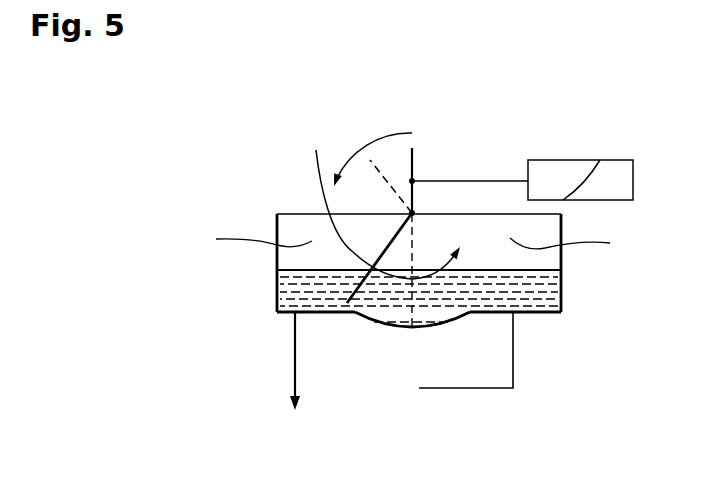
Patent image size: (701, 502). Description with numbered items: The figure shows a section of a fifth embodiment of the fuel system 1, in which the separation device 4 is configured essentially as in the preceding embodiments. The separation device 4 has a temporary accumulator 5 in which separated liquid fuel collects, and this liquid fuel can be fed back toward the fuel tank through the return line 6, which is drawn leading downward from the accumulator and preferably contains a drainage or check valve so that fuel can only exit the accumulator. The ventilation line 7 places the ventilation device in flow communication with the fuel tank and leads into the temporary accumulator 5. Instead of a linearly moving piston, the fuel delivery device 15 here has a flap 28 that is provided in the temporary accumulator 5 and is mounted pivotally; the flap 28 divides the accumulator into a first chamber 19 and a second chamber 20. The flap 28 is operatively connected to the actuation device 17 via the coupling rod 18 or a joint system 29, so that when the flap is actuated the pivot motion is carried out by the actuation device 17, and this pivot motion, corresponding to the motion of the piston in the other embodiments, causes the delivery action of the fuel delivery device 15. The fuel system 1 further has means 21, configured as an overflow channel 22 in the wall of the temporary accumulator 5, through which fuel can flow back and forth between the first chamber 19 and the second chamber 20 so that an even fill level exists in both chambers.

The fuel system 1 is at (240, 157).
The separation device 4 is at (501, 132).
The temporary accumulator 5 is at (436, 240).
The return line 6 is at (293, 352).
The ventilation line 7 is at (465, 390).
The fuel delivery device 15 is at (365, 78).
The actuation device 17 is at (568, 170).
The coupling rod 18 is at (467, 181).
The first chamber 19 is at (250, 240).
The second chamber 20 is at (573, 245).
The means 21 is at (355, 343).
The overflow channel 22 is at (395, 328).
The flap 28 is at (376, 203).
The joint system 29 is at (398, 110).